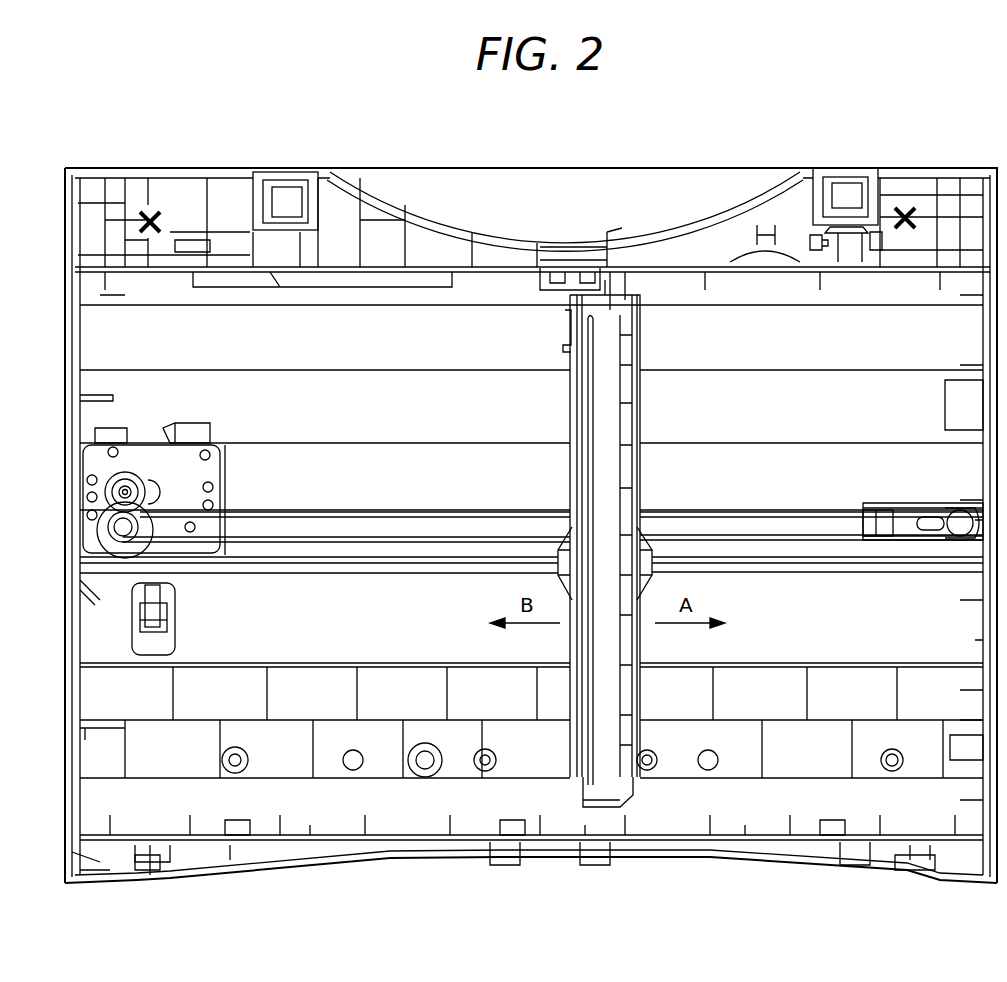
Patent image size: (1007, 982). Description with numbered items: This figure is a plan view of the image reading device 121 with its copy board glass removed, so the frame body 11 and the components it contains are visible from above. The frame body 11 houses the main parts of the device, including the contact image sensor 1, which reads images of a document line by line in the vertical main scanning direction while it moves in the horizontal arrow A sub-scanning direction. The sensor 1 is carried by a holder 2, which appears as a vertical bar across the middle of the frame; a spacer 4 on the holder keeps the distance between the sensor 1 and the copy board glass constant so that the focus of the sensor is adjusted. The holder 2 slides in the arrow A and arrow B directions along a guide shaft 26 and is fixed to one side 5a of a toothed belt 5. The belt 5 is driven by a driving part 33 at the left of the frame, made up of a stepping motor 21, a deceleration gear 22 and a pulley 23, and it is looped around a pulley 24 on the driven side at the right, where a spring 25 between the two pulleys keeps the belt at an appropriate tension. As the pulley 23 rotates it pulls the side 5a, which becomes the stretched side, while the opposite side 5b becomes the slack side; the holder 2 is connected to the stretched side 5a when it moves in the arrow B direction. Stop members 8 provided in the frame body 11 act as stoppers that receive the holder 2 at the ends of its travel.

The contact image sensor (CIS) 1 is at (590, 472).
The holder 2 is at (640, 385).
The spacer 4 is at (570, 300).
The belt 5 is at (745, 510).
The one side of the belt 5a is at (785, 545).
The other side of the belt 5b is at (810, 510).
The stop members 8 is at (100, 392).
The frame body 11 is at (947, 162).
The stepping motor 21 is at (148, 488).
The deceleration gear 22 is at (125, 492).
The pulley 23 is at (123, 535).
The pulley on a driven side 24 is at (960, 540).
The spring 25 is at (878, 542).
The guide shaft 26 is at (333, 565).
The driving part 33 is at (243, 502).
The image reading device 121 is at (841, 162).